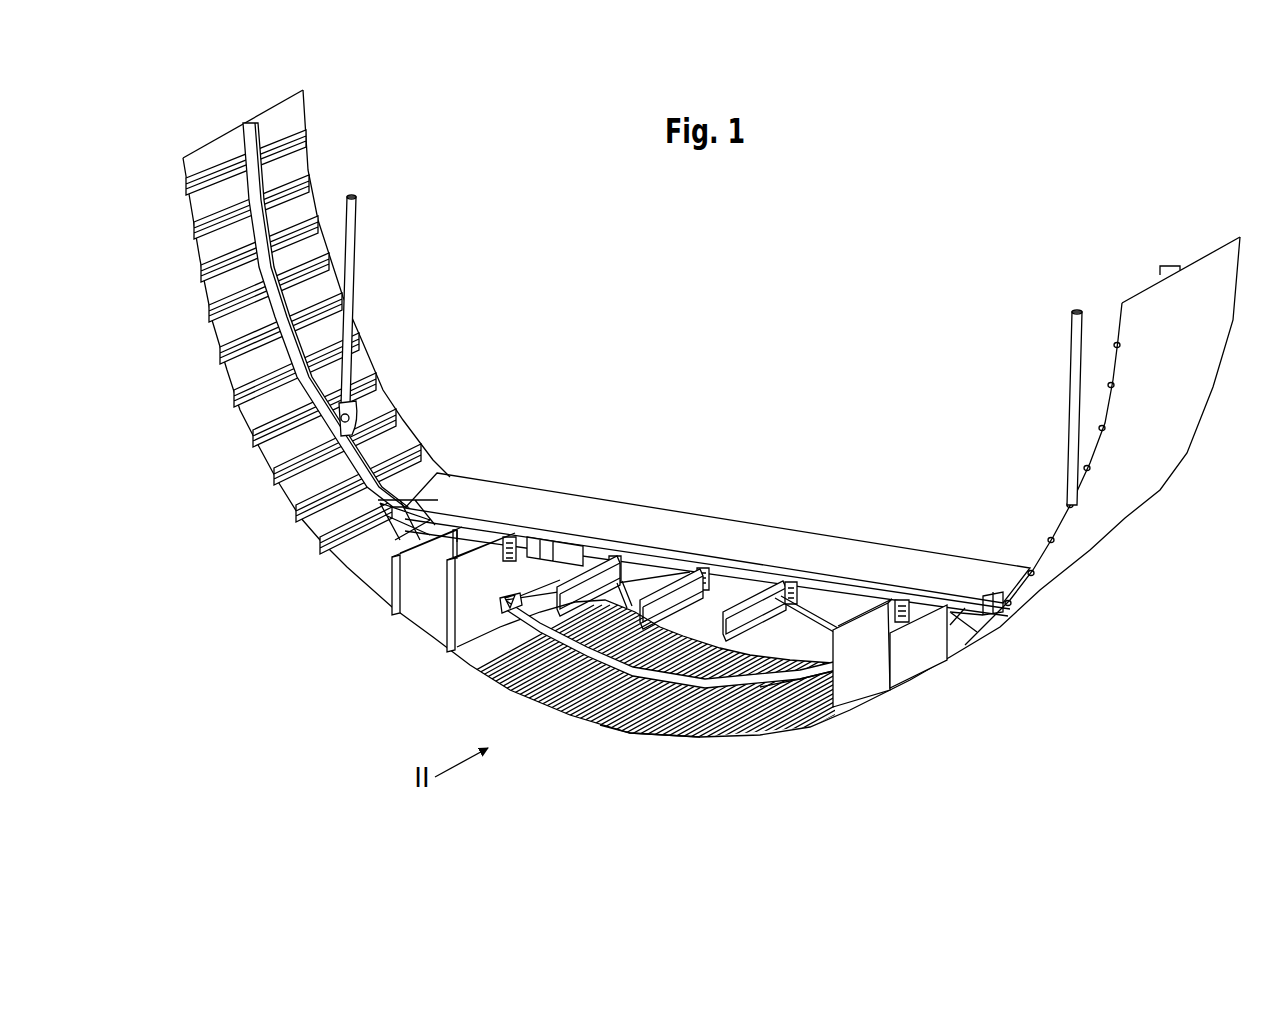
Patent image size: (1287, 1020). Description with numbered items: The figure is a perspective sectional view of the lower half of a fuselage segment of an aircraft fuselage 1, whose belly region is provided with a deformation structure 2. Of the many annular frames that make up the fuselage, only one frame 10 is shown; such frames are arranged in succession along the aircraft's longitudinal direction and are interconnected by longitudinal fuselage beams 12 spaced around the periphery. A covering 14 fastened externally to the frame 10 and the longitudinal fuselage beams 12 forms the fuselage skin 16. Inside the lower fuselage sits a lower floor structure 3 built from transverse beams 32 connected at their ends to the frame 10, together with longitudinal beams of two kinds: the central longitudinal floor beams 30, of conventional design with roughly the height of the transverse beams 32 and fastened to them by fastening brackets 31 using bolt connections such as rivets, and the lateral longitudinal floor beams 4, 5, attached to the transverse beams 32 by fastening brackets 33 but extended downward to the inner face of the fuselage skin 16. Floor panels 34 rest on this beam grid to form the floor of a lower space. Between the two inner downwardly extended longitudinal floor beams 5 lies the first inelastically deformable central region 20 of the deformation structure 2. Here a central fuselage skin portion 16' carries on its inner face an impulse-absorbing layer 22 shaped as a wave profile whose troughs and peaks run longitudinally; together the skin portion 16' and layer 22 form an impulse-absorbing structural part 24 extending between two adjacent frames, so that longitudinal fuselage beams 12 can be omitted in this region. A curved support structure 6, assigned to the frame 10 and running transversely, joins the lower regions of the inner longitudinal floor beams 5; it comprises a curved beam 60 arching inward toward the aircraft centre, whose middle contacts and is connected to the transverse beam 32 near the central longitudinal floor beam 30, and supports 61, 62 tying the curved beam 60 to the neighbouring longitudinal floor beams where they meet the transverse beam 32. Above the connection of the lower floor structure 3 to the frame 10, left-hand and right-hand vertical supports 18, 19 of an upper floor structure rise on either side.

The aircraft fuselage 1 is at (250, 477).
The deformation structure 2 is at (813, 731).
The lower floor structure 3 is at (912, 542).
The lateral longitudinal floor beam 4 is at (390, 612).
The inner downwardly extended longitudinal floor beam 5 is at (447, 652).
The curved support structure 6 is at (780, 636).
The annular frame 10 is at (253, 172).
The longitudinal fuselage beam 12 is at (235, 400).
The covering 14 is at (350, 577).
The fuselage skin 16 is at (1102, 441).
The fuselage skin portion 16' is at (650, 765).
The left-hand vertical support 18 is at (352, 236).
The right-hand vertical support 19 is at (1074, 358).
The first inelastically deformable central region 20 is at (624, 736).
The impulse-absorbing layer 22 is at (563, 707).
The impulse-absorbing structural part 24 is at (507, 688).
The central longitudinal floor beam 30 is at (592, 573).
The fastening bracket 31 is at (790, 607).
The transverse beam 32 is at (557, 547).
The fastening bracket 33 is at (513, 540).
The floor panel 34 is at (930, 567).
The curved beam 60 is at (820, 648).
The support 61 is at (627, 580).
The support 62 is at (807, 603).